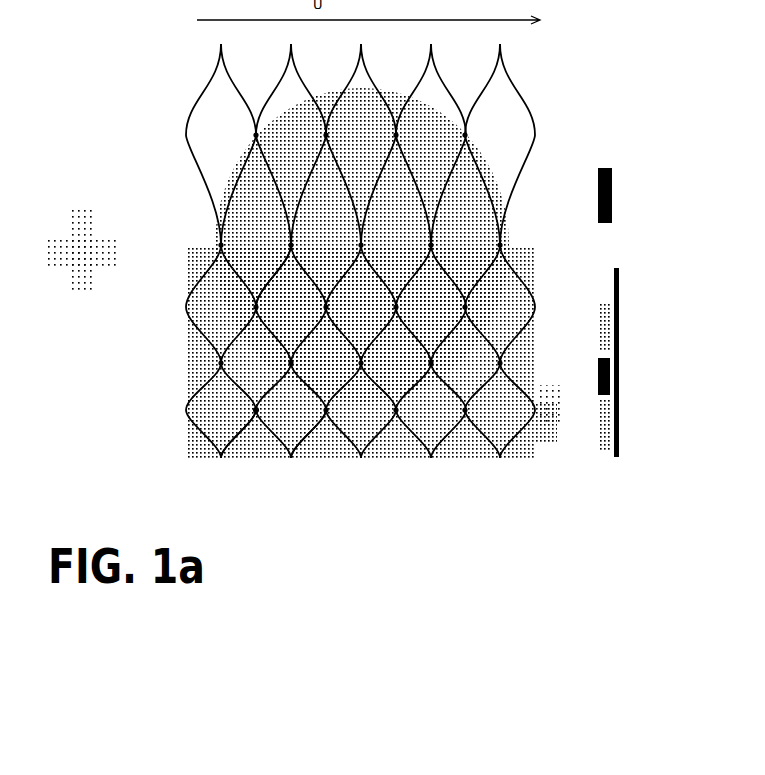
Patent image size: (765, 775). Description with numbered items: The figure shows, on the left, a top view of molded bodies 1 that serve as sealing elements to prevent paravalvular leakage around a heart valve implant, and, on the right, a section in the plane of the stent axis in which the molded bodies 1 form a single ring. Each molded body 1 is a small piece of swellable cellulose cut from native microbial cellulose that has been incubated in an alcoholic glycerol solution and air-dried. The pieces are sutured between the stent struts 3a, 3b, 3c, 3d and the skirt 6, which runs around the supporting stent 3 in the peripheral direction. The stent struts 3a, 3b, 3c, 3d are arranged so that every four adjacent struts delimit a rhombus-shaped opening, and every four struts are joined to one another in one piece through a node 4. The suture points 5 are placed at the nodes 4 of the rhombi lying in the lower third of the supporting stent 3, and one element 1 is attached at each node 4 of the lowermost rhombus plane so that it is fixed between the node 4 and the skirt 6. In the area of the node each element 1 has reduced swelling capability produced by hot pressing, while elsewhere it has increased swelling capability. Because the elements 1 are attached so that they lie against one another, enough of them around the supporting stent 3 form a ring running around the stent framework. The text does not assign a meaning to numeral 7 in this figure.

The molded body 1 is at (600, 303).
The supporting stent 3 is at (208, 70).
The stent strut 3a is at (234, 376).
The stent strut 3b is at (240, 442).
The stent strut 3c is at (279, 372).
The stent strut 3d is at (285, 447).
The node 4 is at (197, 390).
The suture point 5 is at (255, 408).
The skirt 6 is at (197, 350).
The coating 7 is at (197, 268).